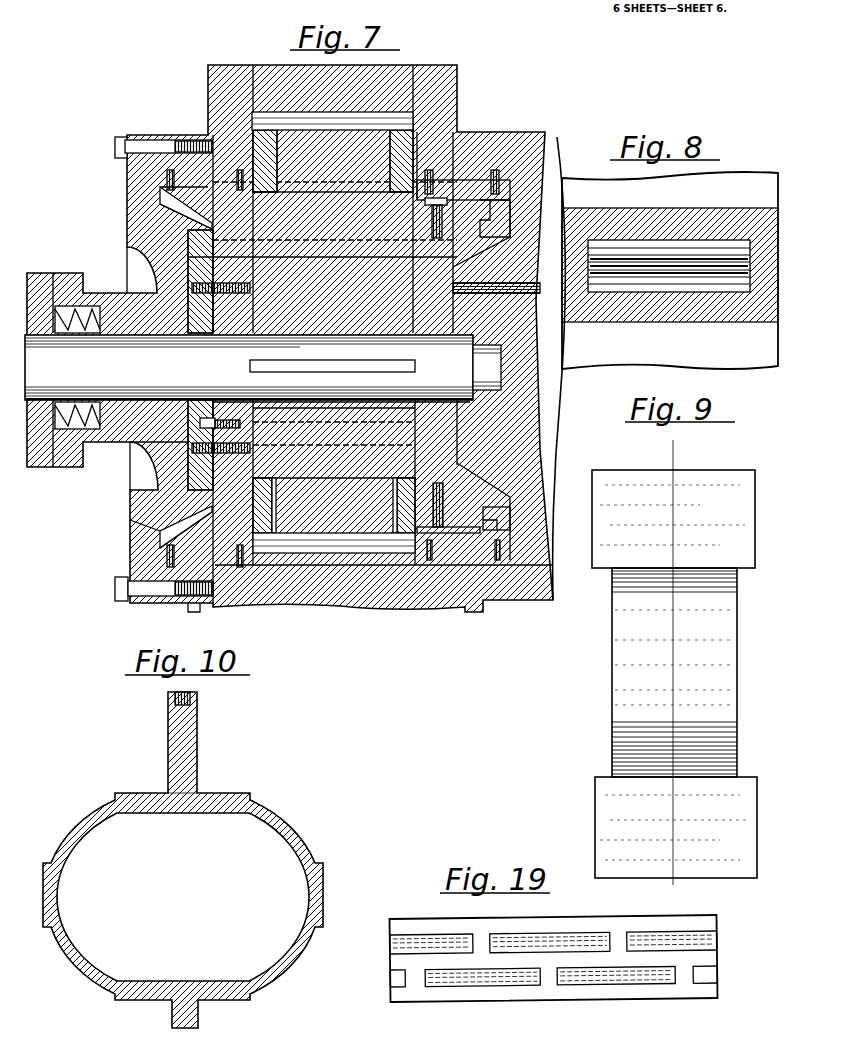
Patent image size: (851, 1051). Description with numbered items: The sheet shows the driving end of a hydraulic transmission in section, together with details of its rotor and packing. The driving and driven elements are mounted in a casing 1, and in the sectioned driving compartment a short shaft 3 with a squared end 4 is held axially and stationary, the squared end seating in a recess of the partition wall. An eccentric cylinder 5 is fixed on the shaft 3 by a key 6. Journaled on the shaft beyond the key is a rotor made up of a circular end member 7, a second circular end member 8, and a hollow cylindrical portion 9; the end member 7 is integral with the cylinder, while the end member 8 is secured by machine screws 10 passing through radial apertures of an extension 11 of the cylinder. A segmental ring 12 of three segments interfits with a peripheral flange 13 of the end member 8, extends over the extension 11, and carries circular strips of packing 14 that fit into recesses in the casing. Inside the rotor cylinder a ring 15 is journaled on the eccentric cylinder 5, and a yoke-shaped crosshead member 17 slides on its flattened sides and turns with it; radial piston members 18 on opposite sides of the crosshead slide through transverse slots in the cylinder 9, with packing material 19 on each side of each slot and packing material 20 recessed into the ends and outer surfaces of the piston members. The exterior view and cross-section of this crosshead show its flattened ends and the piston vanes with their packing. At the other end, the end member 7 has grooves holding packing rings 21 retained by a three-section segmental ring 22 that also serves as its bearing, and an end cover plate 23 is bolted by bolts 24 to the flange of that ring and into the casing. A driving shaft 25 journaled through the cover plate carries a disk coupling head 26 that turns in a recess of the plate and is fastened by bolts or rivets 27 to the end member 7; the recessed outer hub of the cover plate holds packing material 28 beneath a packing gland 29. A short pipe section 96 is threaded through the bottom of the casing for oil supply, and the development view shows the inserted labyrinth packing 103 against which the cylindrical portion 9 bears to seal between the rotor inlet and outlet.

In FIG. 7, the casing 1 is at (340, 607).
In FIG. 7, the short shaft 3 is at (322, 369).
In FIG. 7, the squared end 4 is at (479, 367).
In FIG. 7, the eccentric cylinder 5 is at (370, 320).
In FIG. 7, the key 6 is at (415, 366).
In FIG. 7, the circular end member 7 is at (160, 470).
In FIG. 7, the circular end member 8 is at (437, 430).
In FIG. 7, the hollow cylindrical portion 9 is at (127, 560).
In FIG. 8, the hollow cylindrical portion 9 is at (670, 270).
In FIG. 7, the machine screws 10 is at (445, 225).
In FIG. 9, the machine screws 10 is at (678, 894).
In FIG. 7, the extension 11 is at (450, 197).
In FIG. 7, the segmental ring 12 is at (503, 197).
In FIG. 7, the peripheral flange 13 is at (545, 135).
In FIG. 7, the packing 14 is at (430, 167).
In FIG. 7, the ring 15 is at (347, 253).
In FIG. 7, the crosshead member 17 is at (277, 232).
In FIG. 9, the crosshead member 17 is at (674, 672).
In FIG. 10, the crosshead member 17 is at (187, 860).
In FIG. 7, the piston members 18 is at (373, 137).
In FIG. 8, the piston members 18 is at (627, 263).
In FIG. 9, the piston members 18 is at (674, 674).
In FIG. 10, the piston members 18 is at (197, 772).
In FIG. 8, the packing material 19 is at (700, 287).
In FIG. 7, the packing material 20 is at (410, 140).
In FIG. 10, the packing material 20 is at (178, 700).
In FIG. 7, the packing rings 21 is at (170, 168).
In FIG. 7, the segmental ring 22 is at (208, 165).
In FIG. 7, the end cover plate 23 is at (145, 530).
In FIG. 7, the bolts 24 is at (118, 140).
In FIG. 7, the driving shaft 25 is at (249, 367).
In FIG. 7, the disk coupling head 26 is at (197, 450).
In FIG. 7, the bolts or rivets 27 is at (223, 483).
In FIG. 7, the packing material 28 is at (92, 310).
In FIG. 7, the packing gland 29 is at (200, 423).
In FIG. 7, the short pipe section 96 is at (478, 607).
In FIG. 19, the labyrinth packing 103 is at (553, 988).